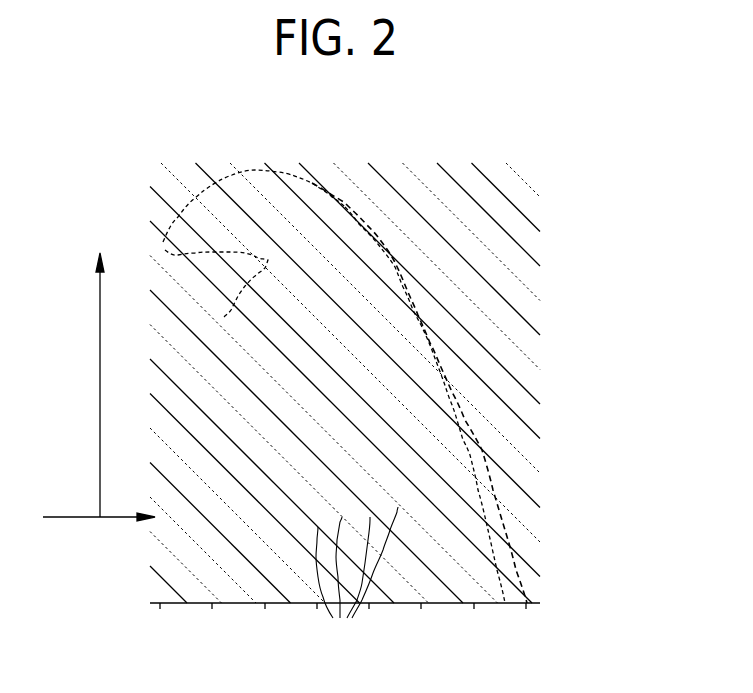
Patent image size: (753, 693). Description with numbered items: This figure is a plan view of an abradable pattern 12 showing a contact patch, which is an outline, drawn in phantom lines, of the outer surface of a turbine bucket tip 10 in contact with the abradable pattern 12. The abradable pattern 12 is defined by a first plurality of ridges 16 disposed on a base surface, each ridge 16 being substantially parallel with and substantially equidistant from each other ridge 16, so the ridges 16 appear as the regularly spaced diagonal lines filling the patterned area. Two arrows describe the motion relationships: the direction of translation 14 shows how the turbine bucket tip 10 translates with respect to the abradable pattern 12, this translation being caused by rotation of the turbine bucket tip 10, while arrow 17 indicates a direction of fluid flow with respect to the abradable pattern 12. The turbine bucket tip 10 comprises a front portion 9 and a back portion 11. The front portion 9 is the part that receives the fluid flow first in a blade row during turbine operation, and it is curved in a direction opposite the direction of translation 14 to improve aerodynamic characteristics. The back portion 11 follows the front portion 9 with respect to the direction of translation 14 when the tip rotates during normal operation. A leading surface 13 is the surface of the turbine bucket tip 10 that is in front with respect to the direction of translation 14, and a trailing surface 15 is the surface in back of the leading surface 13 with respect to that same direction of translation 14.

The front portion 9 is at (292, 203).
The turbine bucket tip 10 is at (435, 353).
The back portion 11 is at (470, 492).
The abradable pattern 12 is at (572, 263).
The leading surface 13 is at (262, 168).
The direction of translation 14 is at (100, 377).
The trailing surface 15 is at (220, 317).
The ridges 16 is at (357, 581).
The arrow 17 is at (105, 520).